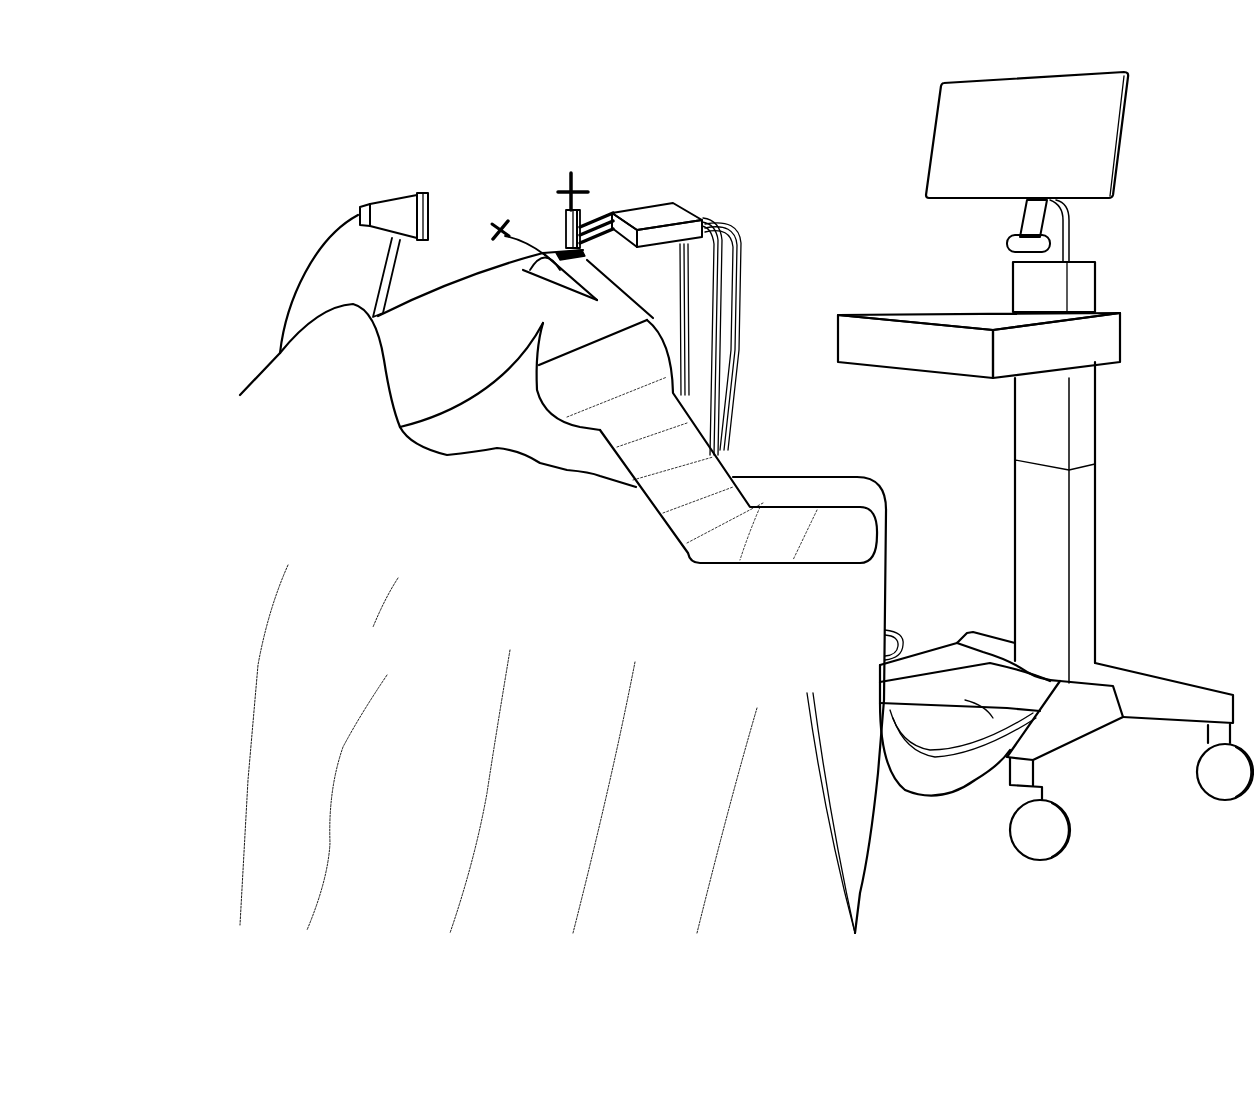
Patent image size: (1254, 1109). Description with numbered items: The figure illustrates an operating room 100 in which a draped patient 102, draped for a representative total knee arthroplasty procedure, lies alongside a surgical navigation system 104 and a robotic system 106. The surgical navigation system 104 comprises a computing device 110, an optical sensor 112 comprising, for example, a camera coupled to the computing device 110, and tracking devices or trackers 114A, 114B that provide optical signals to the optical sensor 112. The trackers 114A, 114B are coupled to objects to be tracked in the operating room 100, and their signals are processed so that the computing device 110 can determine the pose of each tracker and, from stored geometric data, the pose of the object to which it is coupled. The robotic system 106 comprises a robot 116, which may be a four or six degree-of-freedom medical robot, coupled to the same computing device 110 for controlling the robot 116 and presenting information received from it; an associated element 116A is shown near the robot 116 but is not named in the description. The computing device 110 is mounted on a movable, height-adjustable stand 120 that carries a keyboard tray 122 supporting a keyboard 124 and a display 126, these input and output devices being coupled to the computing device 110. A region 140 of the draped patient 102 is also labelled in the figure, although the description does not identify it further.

The operating room 100 is at (417, 39).
The draped patient 102 is at (512, 605).
The surgical navigation system 104 is at (795, 174).
The robotic system 106 is at (842, 388).
The computing device 110 is at (1120, 337).
The optical sensor 112 is at (387, 195).
The tracking device 114A is at (490, 224).
The tracking device 114B is at (587, 192).
The robot 116 is at (683, 206).
The connector leads 116A is at (616, 256).
The stand 120 is at (1089, 515).
The keyboard tray 122 is at (888, 351).
The keyboard 124 is at (900, 308).
The display 126 is at (988, 166).
The patient body region 140 is at (460, 375).